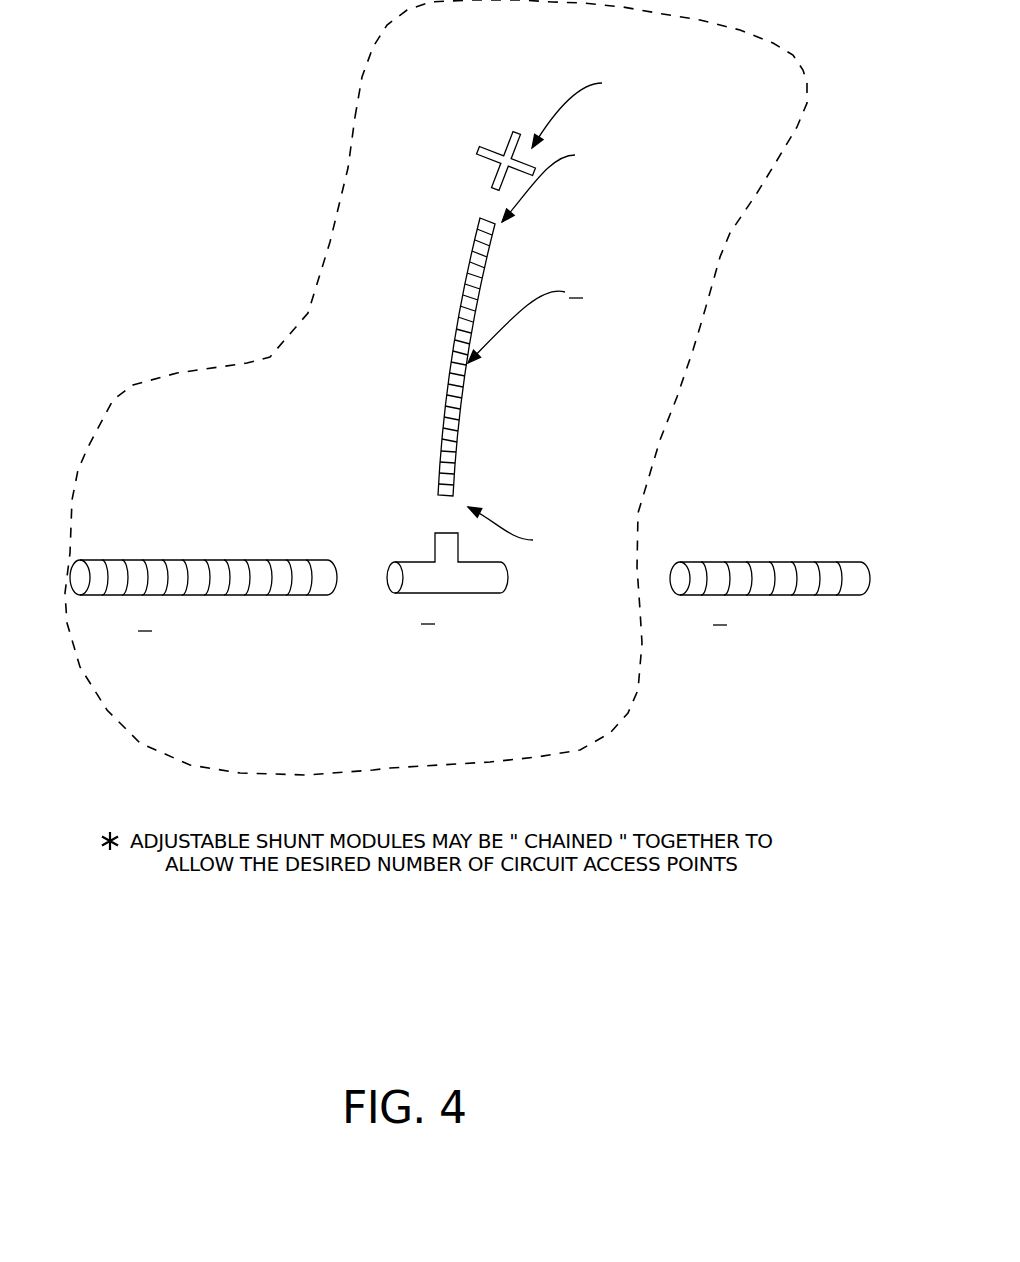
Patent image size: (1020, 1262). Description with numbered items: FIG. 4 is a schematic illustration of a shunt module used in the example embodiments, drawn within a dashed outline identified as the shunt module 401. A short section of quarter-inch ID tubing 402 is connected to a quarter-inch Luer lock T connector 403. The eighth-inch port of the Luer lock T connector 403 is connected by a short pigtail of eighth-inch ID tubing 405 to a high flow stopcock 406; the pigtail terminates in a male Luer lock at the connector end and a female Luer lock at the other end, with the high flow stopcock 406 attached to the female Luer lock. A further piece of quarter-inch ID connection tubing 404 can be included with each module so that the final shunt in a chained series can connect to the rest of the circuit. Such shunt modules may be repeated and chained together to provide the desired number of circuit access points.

The adjustable shunt module 401 is at (257, 337).
The ¼" ID tubing 402 is at (168, 537).
The ¼" Luer lock T connector 403 is at (390, 610).
The ¼" tubing 404 is at (765, 508).
The 1/8 inch ID tubing 405 is at (428, 312).
The high flow stopcock 406 is at (487, 128).